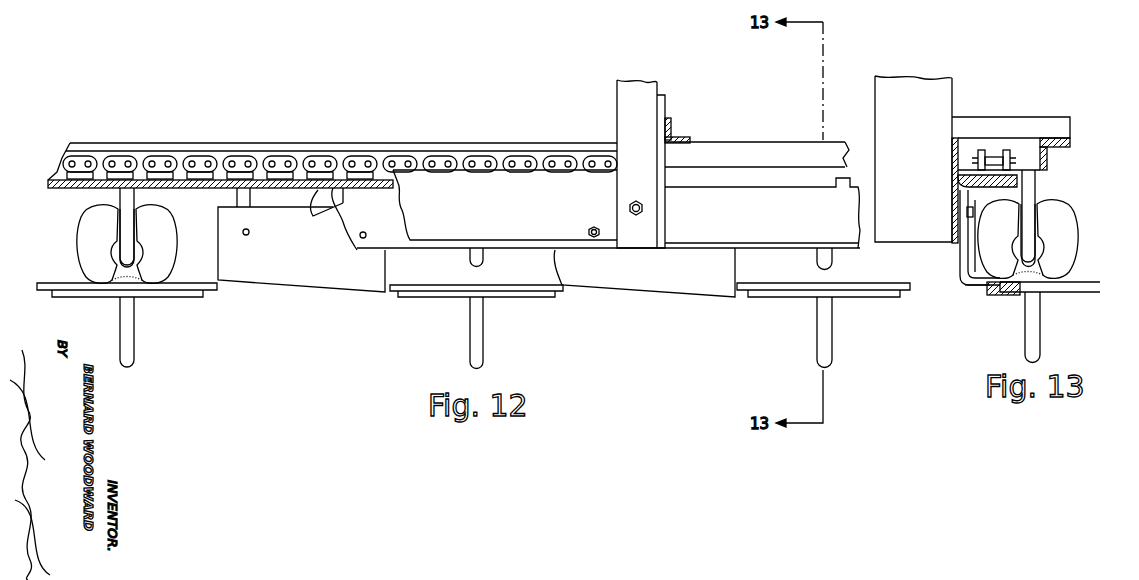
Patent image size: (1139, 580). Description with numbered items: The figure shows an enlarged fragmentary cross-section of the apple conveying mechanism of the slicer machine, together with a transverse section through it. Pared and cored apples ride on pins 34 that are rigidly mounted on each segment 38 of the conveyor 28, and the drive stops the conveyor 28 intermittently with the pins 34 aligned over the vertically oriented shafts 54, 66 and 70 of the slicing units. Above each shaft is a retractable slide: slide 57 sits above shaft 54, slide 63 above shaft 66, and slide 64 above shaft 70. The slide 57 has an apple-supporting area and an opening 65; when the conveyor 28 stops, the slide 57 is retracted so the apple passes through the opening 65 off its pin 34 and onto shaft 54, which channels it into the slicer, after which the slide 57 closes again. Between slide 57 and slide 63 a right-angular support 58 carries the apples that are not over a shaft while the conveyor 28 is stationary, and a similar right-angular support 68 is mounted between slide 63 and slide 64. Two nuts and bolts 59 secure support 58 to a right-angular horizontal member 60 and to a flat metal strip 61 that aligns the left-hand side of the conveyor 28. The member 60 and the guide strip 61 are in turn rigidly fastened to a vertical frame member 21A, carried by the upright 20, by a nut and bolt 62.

In FIG. 12, the upright post 20 is at (665, 100).
In FIG. 13, the upright post 20 is at (874, 98).
In FIG. 12, the vertical frame member 21A is at (660, 118).
In FIG. 12, the conveyor system 28 is at (390, 142).
In FIG. 13, the conveyor system 28 is at (963, 160).
In FIG. 12, the pins 34 is at (122, 199).
In FIG. 13, the pins 34 is at (1028, 224).
In FIG. 12, the segment 38 is at (190, 163).
In FIG. 13, the segment 38 is at (1026, 165).
In FIG. 12, the shaft 54 is at (833, 348).
In FIG. 13, the shaft 54 is at (1040, 346).
In FIG. 12, the slide 57 is at (842, 298).
In FIG. 13, the slide 57 is at (992, 298).
In FIG. 12, the right-angular support 58 is at (688, 283).
In FIG. 13, the right-angular support 58 is at (962, 282).
In FIG. 12, the nuts and bolts 59 is at (595, 240).
In FIG. 13, the nuts and bolts 59 is at (974, 243).
In FIG. 12, the right-angular horizontal member 60 is at (322, 210).
In FIG. 13, the right-angular horizontal member 60 is at (960, 247).
In FIG. 12, the flat metal strip 61 is at (540, 243).
In FIG. 13, the flat metal strip 61 is at (950, 176).
In FIG. 12, the nut and bolt 62 is at (629, 205).
In FIG. 13, the nut and bolt 62 is at (974, 211).
In FIG. 12, the slide 63 is at (486, 298).
In FIG. 12, the slide 64 is at (160, 298).
In FIG. 13, the opening 65 is at (1060, 300).
In FIG. 12, the shaft 66 is at (486, 352).
In FIG. 12, the right-angular support 68 is at (344, 283).
In FIG. 12, the shaft 70 is at (135, 351).